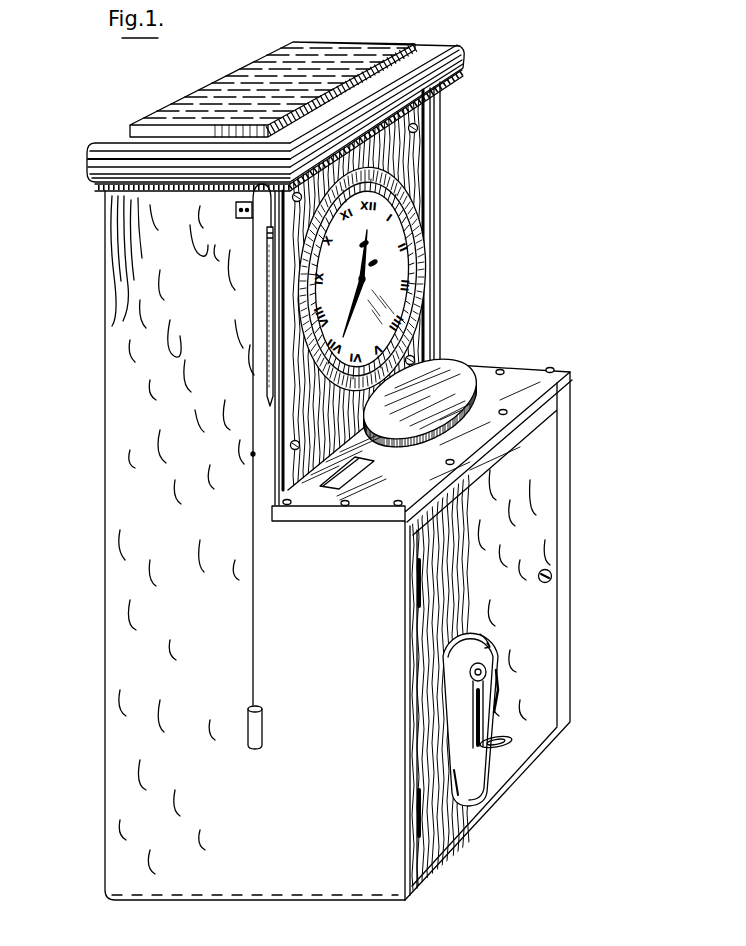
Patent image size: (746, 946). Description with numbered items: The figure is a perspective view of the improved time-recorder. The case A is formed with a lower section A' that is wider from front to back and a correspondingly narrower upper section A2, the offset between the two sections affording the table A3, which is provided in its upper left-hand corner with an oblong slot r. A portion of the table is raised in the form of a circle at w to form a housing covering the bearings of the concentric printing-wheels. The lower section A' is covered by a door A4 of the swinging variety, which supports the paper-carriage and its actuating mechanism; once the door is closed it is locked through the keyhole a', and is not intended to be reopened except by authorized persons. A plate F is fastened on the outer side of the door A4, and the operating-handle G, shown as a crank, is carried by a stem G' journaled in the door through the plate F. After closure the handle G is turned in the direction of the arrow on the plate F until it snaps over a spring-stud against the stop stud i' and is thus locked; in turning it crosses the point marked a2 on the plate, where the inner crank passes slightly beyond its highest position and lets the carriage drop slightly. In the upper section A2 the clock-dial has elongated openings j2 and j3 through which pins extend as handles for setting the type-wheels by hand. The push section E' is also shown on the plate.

The case A is at (224, 545).
The lower section A' is at (269, 711).
The upper section A2 is at (197, 348).
The table A3 is at (517, 373).
The door A4 is at (548, 626).
The plate F is at (493, 647).
The push plate E' is at (499, 777).
The operating-handle G is at (439, 770).
The stem G' is at (505, 666).
The stud i' is at (424, 719).
The elongated opening j2 is at (377, 262).
The elongated opening j3 is at (367, 243).
The housing w is at (458, 378).
The oblong slot r is at (338, 492).
The keyhole a' is at (571, 558).
The point on plate a2 is at (495, 693).